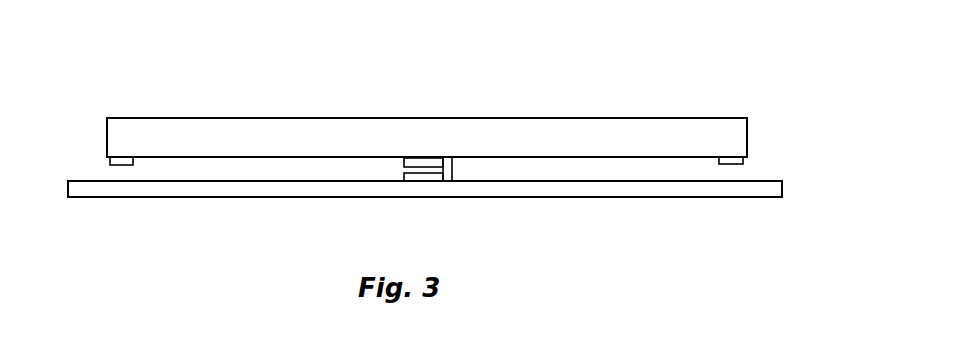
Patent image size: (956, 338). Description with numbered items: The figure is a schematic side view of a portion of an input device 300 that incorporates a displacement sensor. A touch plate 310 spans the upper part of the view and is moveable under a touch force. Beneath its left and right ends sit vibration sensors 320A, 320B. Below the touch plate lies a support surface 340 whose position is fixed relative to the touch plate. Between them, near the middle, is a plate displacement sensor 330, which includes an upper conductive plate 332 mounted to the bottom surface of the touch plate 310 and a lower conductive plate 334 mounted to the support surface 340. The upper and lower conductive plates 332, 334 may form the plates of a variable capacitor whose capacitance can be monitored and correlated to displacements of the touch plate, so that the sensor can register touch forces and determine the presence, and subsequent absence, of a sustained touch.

The input device 300 is at (658, 75).
The touch plate 310 is at (258, 118).
The vibration sensor 320A is at (110, 161).
The vibration sensor 320B is at (742, 159).
The plate displacement sensor 330 is at (455, 167).
The upper conductive plate 332 is at (417, 162).
The lower conductive plate 334 is at (420, 177).
The support surface 340 is at (250, 197).